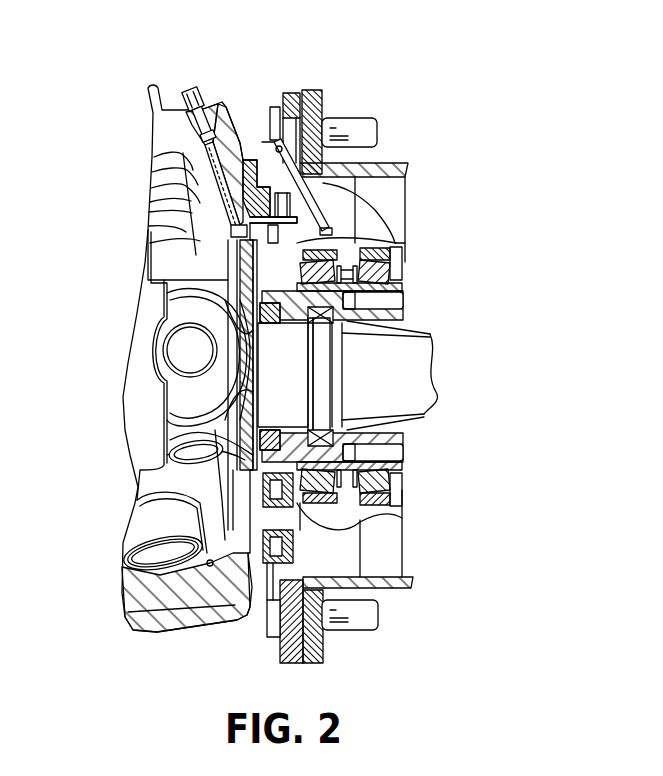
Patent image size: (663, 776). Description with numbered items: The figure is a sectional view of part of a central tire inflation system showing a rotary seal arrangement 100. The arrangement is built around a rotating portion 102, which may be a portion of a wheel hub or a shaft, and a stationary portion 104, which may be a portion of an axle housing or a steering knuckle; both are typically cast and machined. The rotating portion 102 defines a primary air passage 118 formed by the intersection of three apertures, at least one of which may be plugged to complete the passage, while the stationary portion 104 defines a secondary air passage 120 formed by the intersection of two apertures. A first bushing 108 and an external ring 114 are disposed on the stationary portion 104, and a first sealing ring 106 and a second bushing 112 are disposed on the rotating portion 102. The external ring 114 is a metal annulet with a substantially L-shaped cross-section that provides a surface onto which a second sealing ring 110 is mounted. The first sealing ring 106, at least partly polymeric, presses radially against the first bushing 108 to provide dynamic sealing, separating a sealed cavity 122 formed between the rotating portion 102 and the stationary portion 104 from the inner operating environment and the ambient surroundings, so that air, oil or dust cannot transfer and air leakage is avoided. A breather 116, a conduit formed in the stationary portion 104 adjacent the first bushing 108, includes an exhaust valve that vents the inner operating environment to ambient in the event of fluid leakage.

The rotary seal arrangement 100 is at (286, 354).
The rotating portion 102 is at (275, 100).
The stationary portion 104 is at (222, 104).
The first sealing ring 106 is at (297, 241).
The first bushing 108 is at (360, 268).
The second sealing ring 110 is at (293, 543).
The second bushing 112 is at (262, 582).
The external ring 114 is at (252, 158).
The breather 116 is at (223, 262).
The primary air passage 118 is at (316, 200).
The secondary air passage 120 is at (196, 130).
The sealed cavity 122 is at (263, 519).